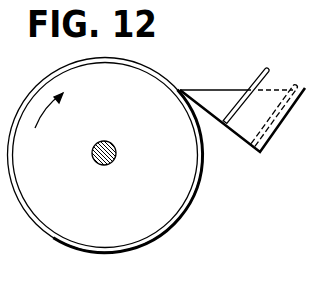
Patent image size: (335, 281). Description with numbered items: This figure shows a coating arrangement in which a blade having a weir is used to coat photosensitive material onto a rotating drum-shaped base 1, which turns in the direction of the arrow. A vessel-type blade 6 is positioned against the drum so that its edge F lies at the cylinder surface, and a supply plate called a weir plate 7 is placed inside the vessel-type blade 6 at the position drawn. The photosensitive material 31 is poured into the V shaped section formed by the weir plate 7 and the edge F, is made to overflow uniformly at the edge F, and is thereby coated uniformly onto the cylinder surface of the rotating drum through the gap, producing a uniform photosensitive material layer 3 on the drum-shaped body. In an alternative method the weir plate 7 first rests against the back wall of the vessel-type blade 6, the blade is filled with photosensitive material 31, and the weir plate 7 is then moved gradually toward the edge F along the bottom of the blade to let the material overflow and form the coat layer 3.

The rotating wheel 1 is at (62, 223).
The photosensitive material layer 3 is at (178, 219).
The edge F is at (180, 88).
The photosensitive material 31 is at (215, 98).
The weir plate 7 is at (262, 75).
The vessel-type blade 6 is at (287, 117).